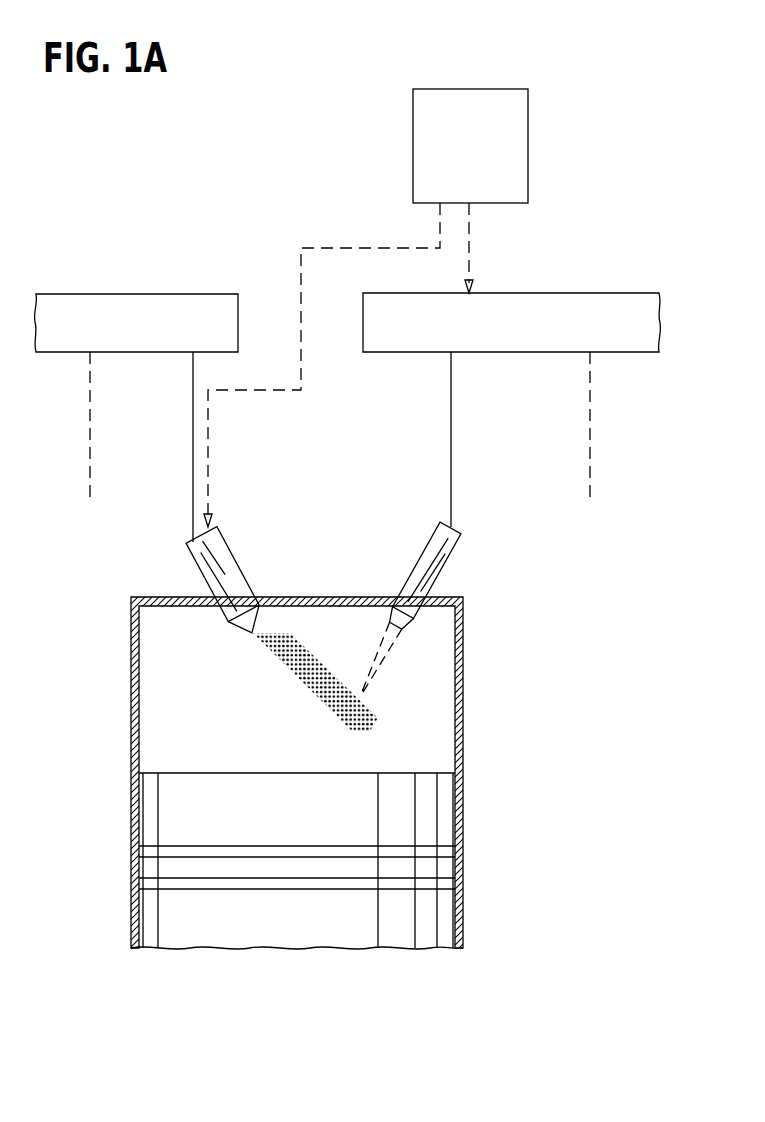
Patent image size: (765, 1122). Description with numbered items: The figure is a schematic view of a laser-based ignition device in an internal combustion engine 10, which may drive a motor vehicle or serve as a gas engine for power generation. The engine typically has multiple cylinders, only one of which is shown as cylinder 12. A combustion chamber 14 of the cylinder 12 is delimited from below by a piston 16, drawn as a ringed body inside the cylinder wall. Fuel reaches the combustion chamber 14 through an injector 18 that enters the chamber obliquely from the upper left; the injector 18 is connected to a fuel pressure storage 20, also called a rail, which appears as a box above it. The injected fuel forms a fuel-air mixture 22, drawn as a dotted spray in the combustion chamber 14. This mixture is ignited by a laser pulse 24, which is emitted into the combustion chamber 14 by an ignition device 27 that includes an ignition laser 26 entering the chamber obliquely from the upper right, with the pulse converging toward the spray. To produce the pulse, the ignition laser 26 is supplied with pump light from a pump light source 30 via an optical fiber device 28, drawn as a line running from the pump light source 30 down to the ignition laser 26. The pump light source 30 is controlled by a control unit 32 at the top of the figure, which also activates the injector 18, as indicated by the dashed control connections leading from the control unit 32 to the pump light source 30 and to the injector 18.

The internal combustion engine 10 is at (522, 814).
The cylinder 12 is at (460, 735).
The combustion chamber 14 is at (173, 677).
The piston 16 is at (173, 812).
The injector 18 is at (222, 563).
The fuel pressure storage 20 is at (140, 310).
The fuel-air mixture 22 is at (302, 660).
The laser pulse 24 is at (383, 657).
The ignition laser 26 is at (428, 563).
The ignition device 27 is at (576, 172).
The optical fiber device 28 is at (451, 437).
The pump light source 30 is at (615, 310).
The control unit 32 is at (473, 105).